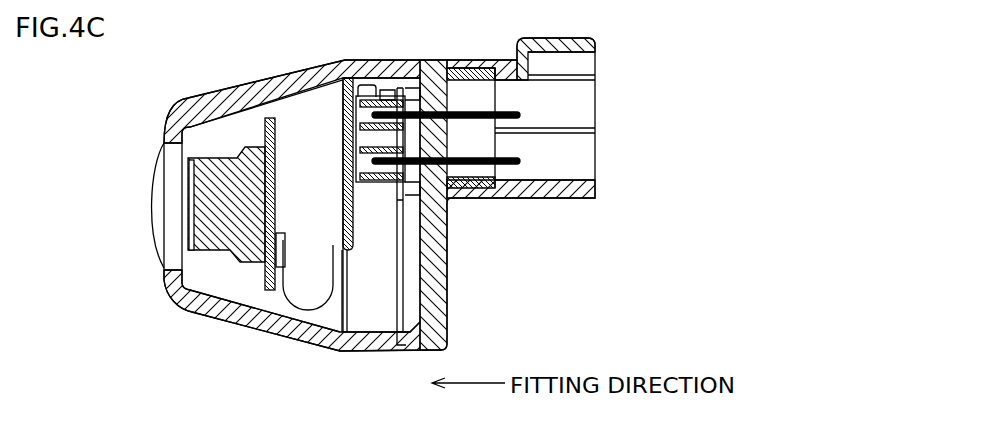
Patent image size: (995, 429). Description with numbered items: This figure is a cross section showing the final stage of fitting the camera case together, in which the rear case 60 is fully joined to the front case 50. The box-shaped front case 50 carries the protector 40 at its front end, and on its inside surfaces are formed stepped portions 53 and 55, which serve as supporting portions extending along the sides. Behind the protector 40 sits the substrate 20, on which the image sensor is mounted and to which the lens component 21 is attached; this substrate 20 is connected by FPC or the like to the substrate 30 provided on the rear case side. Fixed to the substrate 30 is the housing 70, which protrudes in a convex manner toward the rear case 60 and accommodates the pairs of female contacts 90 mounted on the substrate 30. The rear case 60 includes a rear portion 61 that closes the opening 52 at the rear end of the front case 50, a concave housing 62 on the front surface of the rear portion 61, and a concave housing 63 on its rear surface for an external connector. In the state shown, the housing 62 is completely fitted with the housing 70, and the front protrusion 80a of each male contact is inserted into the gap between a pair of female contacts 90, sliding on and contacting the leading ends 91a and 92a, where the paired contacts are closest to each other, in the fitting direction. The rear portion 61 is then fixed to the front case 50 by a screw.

The front case 50 is at (366, 216).
The stepped portion 53 is at (345, 68).
The stepped portion 55 is at (343, 320).
The opening 52 is at (397, 310).
The rear portion 61 is at (443, 267).
The rear case 60 is at (570, 133).
The concave housing 63 is at (543, 193).
The protector 40 is at (160, 203).
The lens component 21 is at (237, 265).
The substrate 20 is at (263, 280).
The substrate 30 is at (343, 164).
The leading end 92a is at (350, 133).
The leading end 91a is at (350, 158).
The housing 70 is at (369, 89).
The concave housing 62 is at (391, 92).
The front protrusion 80a is at (400, 110).
The female contacts 90 is at (395, 172).